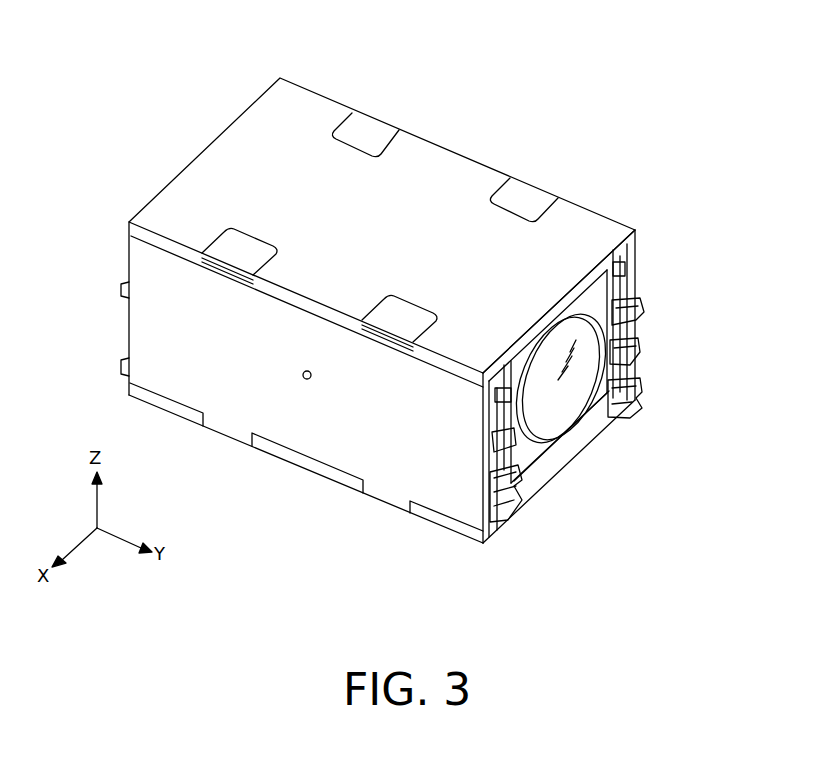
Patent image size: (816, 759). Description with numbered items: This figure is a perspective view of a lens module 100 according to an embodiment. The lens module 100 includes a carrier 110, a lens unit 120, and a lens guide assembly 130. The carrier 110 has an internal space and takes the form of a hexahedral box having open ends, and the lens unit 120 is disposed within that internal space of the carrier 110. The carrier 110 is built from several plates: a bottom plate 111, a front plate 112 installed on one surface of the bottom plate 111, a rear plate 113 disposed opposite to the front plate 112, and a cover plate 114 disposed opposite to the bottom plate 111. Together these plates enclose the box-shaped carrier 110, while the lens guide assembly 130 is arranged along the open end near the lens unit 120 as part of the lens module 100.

The lens module 100 is at (427, 61).
The carrier 110 is at (632, 566).
The bottom plate 111 is at (622, 427).
The front plate 112 is at (537, 483).
The rear plate 113 is at (640, 375).
The cover plate 114 is at (578, 407).
The lens unit 120 is at (638, 292).
The lens guide assembly 130 is at (653, 354).